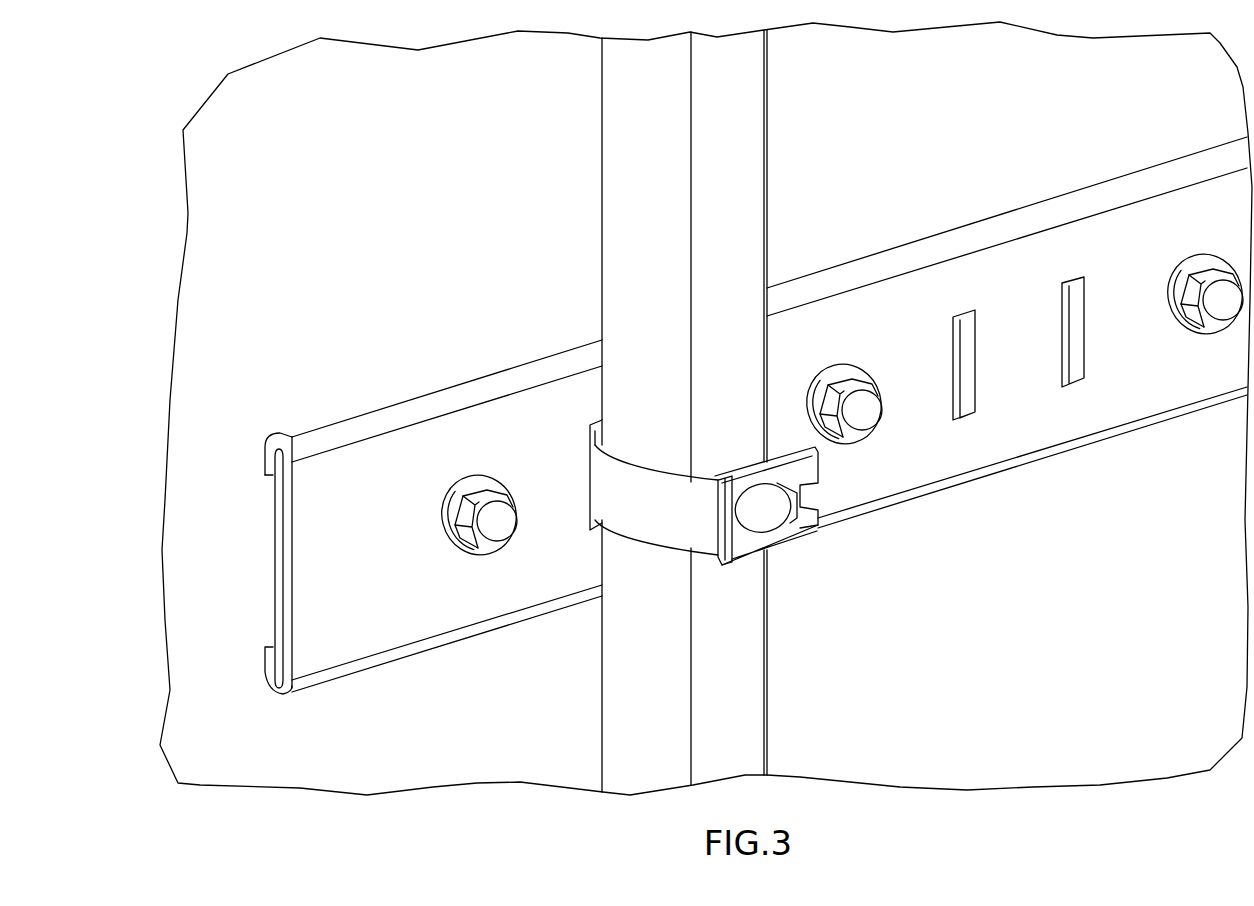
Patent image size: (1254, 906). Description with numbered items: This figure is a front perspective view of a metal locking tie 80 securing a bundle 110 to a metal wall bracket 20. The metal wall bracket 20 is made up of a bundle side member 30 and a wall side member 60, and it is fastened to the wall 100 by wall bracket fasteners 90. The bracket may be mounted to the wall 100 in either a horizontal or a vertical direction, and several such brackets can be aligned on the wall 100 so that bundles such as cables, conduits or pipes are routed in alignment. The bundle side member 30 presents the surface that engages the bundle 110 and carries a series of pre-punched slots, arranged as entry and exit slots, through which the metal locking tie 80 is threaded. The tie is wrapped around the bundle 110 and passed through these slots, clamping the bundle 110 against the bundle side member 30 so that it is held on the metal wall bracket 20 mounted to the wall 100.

The metal wall bracket 20 is at (312, 403).
The bundle side member 30 is at (363, 588).
The wall side member 60 is at (273, 567).
The metal locking tie 80 is at (797, 537).
The wall bracket fastener 90 is at (497, 520).
The wall 100 is at (275, 252).
The bundle 110 is at (741, 123).